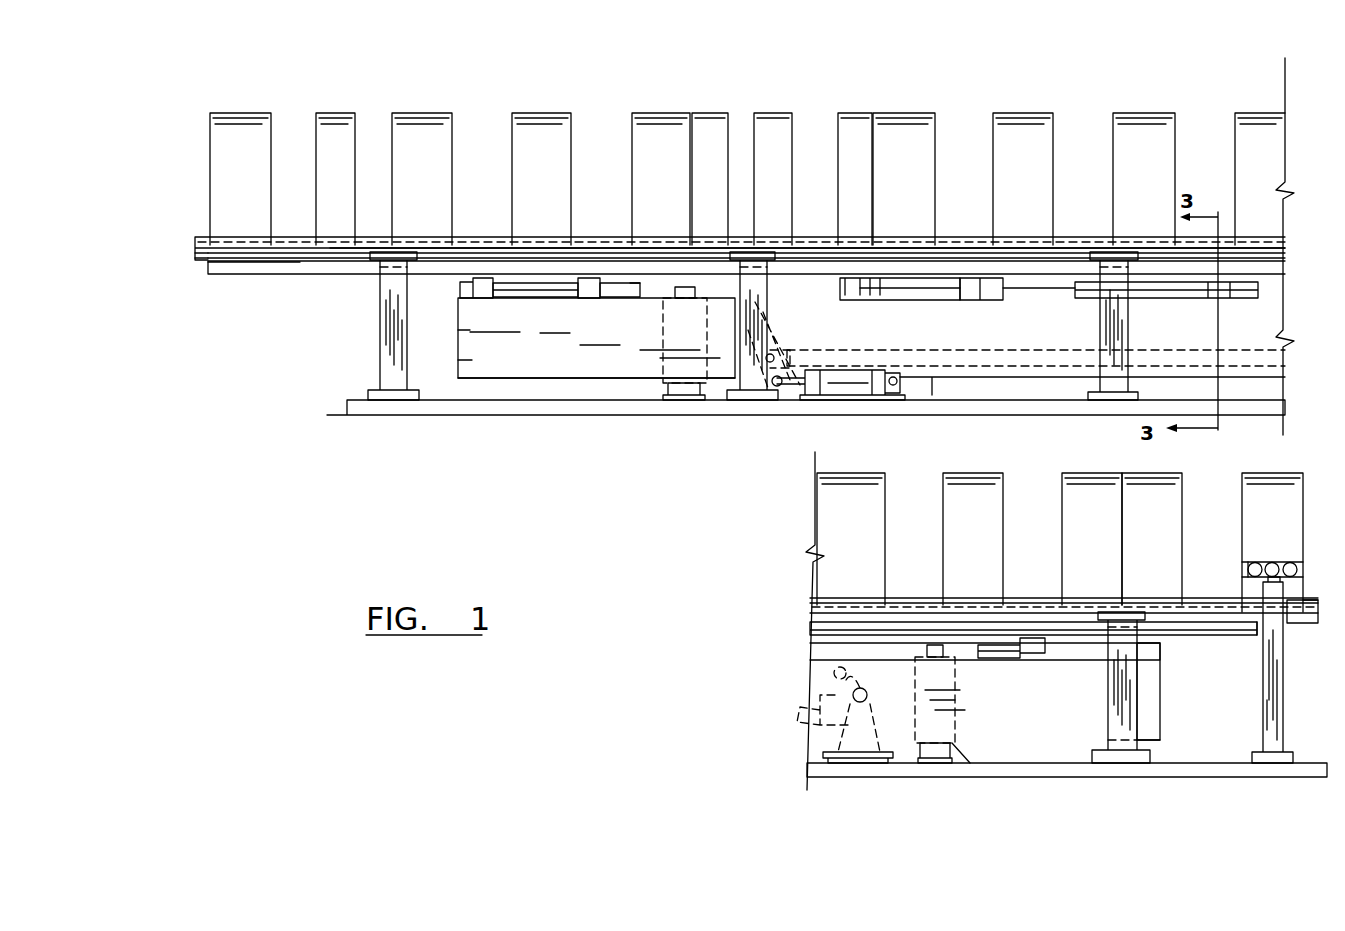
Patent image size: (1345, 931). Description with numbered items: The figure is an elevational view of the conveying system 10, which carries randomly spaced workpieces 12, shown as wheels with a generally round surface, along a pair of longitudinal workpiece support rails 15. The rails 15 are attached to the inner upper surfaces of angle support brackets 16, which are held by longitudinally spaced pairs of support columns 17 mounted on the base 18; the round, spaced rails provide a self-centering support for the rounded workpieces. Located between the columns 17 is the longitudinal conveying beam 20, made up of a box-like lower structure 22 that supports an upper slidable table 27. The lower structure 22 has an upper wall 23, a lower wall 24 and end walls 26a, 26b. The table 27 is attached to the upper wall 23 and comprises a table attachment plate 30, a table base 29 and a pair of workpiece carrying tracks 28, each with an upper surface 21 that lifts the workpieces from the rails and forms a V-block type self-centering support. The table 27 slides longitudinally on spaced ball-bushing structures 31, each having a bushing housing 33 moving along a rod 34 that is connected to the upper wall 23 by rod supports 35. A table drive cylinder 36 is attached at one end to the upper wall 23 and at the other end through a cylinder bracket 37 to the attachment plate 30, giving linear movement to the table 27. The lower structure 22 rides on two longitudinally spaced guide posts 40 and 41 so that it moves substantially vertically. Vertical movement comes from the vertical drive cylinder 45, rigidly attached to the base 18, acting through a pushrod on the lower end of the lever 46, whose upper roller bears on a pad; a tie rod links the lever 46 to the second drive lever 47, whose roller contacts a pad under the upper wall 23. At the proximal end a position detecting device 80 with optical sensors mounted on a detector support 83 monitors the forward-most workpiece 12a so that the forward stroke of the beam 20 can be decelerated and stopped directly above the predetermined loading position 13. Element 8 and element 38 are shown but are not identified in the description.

The stop roller 8 is at (1282, 562).
The conveying system 10 is at (1041, 88).
The workpieces 12 is at (1100, 484).
The forward-most workpiece 12a is at (1258, 484).
The loading position 13 is at (1311, 592).
The workpiece support rails 15 is at (200, 236).
The angle support brackets 16 is at (197, 248).
The support columns 17 is at (397, 330).
The base 18 is at (452, 408).
The longitudinal conveying beam 20 is at (453, 358).
The upper surface 21 is at (208, 263).
The box-like lower structure 22 is at (533, 356).
The upper wall 23 is at (1023, 301).
The lower wall 24 is at (583, 378).
The end wall 26a is at (1162, 726).
The end wall 26b is at (455, 361).
The slidable table 27 is at (243, 285).
The workpiece carrying tracks 28 is at (358, 253).
The table base 29 is at (305, 267).
The table attachment plate 30 is at (290, 276).
The ball-bushing structures 31 is at (552, 304).
The bushing housing 33 is at (483, 289).
The rod 34 is at (610, 289).
The rod supports 35 is at (635, 294).
The table drive cylinder 36 is at (913, 303).
The cylinder bracket 37 is at (990, 301).
The bracket 38 is at (841, 301).
The guide post 40 is at (663, 386).
The guide post 41 is at (960, 749).
The vertical drive cylinder 45 is at (843, 398).
The lever 46 is at (767, 393).
The second drive lever 47 is at (858, 685).
The position detecting device 80 is at (1268, 552).
The detector support 83 is at (1277, 710).